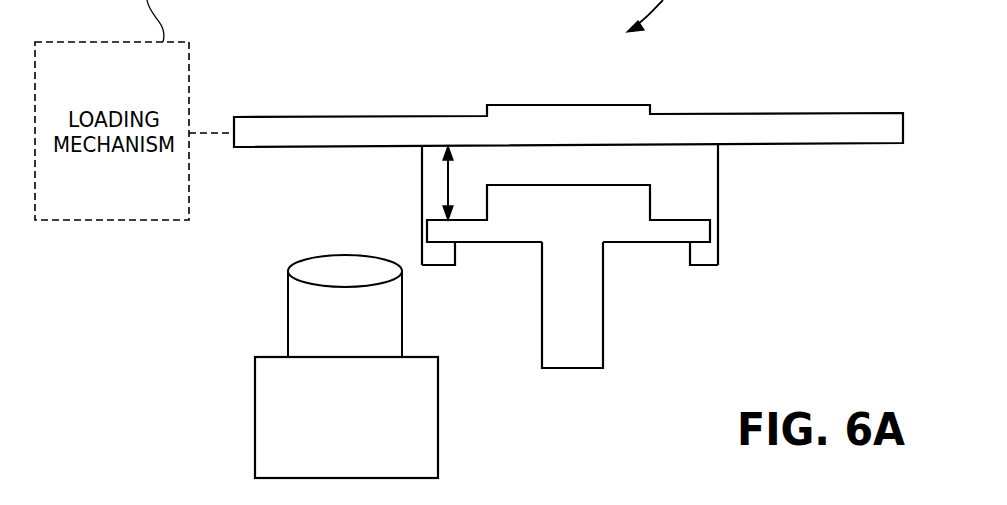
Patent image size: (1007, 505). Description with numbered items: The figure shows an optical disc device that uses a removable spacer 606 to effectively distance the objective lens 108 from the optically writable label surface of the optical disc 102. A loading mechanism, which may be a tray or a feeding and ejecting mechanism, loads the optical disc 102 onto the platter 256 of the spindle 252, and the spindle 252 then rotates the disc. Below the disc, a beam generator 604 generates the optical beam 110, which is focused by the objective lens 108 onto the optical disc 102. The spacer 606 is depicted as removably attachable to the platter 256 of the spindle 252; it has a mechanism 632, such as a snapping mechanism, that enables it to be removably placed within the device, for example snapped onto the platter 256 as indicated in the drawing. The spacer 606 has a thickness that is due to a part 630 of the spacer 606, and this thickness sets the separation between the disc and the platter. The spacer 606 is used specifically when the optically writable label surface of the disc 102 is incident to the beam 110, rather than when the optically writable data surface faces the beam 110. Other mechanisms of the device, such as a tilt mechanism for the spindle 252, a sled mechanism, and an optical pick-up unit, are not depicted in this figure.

The optical disc 102 is at (903, 126).
The part of the spacer 630 is at (417, 178).
The spacer 606 is at (707, 168).
The mechanism 632 is at (442, 262).
The platter 256 is at (502, 237).
The spindle 252 is at (573, 355).
The objective lens 108 is at (318, 268).
The optical beam 110 is at (368, 333).
The beam generator 604 is at (438, 400).